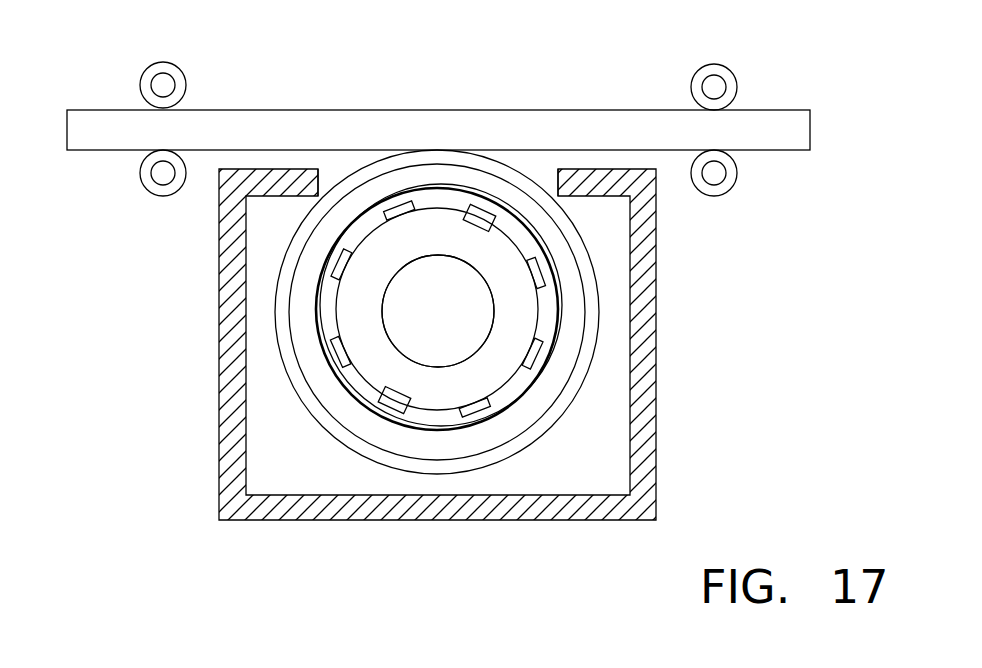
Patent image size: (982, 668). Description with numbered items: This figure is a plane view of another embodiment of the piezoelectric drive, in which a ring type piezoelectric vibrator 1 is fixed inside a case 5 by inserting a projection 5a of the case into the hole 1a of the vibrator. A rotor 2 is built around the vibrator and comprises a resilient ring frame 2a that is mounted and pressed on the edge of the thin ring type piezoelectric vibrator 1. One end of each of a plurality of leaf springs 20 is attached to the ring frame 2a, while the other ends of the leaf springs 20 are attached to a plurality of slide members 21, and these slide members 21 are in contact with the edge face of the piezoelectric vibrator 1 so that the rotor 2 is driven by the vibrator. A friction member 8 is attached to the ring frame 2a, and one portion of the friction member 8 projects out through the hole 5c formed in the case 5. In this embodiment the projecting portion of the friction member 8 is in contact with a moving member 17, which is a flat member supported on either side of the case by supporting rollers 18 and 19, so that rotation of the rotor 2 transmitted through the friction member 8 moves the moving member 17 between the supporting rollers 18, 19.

The moving member 17 is at (485, 122).
The supporting roller 18 is at (150, 162).
The supporting roller 19 is at (733, 168).
The case 5 is at (643, 467).
The hole 5c is at (323, 173).
The friction member 8 is at (483, 162).
The rotor 2 is at (320, 427).
The ring frame 2a is at (313, 247).
The ring type piezoelectric vibrator 1 is at (372, 377).
The hole 1a is at (492, 337).
The projection 5a is at (475, 297).
The leaf spring 20 is at (533, 245).
The slide member 21 is at (480, 212).